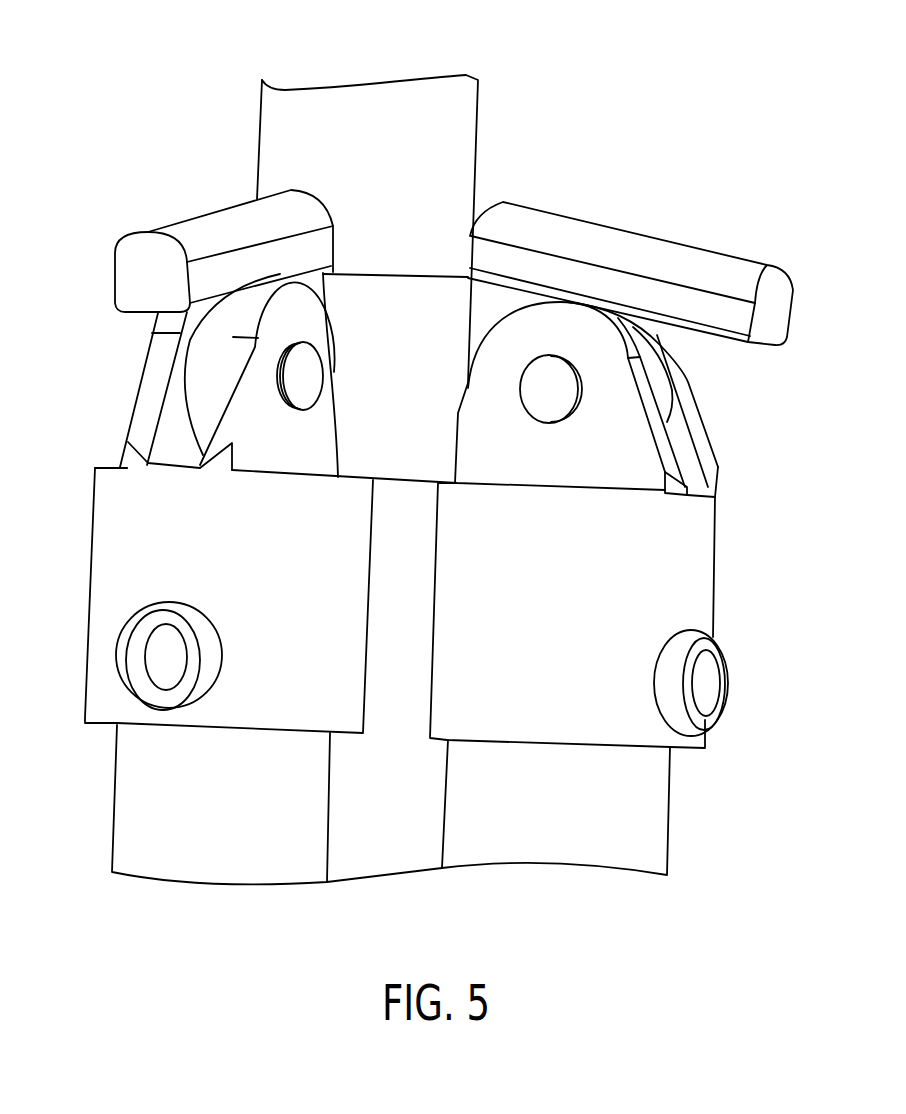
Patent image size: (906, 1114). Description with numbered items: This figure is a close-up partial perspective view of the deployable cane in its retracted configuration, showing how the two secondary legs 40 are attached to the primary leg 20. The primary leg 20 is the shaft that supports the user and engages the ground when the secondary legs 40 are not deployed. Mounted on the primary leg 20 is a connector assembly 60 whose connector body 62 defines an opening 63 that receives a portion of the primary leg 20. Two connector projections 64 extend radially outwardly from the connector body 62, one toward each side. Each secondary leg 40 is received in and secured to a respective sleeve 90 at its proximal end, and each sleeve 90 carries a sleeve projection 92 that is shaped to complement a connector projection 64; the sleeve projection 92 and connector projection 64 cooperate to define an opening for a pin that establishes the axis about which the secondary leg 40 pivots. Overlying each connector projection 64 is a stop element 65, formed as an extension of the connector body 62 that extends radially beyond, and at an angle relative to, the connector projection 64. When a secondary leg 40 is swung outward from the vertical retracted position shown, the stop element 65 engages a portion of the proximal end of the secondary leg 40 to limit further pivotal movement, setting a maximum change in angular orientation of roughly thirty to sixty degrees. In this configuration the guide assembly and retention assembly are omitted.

The primary leg 20 is at (458, 130).
The secondary leg 40 is at (647, 810).
The connector assembly 60 is at (184, 156).
The connector body 62 is at (405, 363).
The opening 63 is at (405, 232).
The connector projection 64 is at (497, 312).
The stop element 65 is at (127, 283).
The sleeve 90 is at (120, 552).
The sleeve projection 92 is at (567, 448).